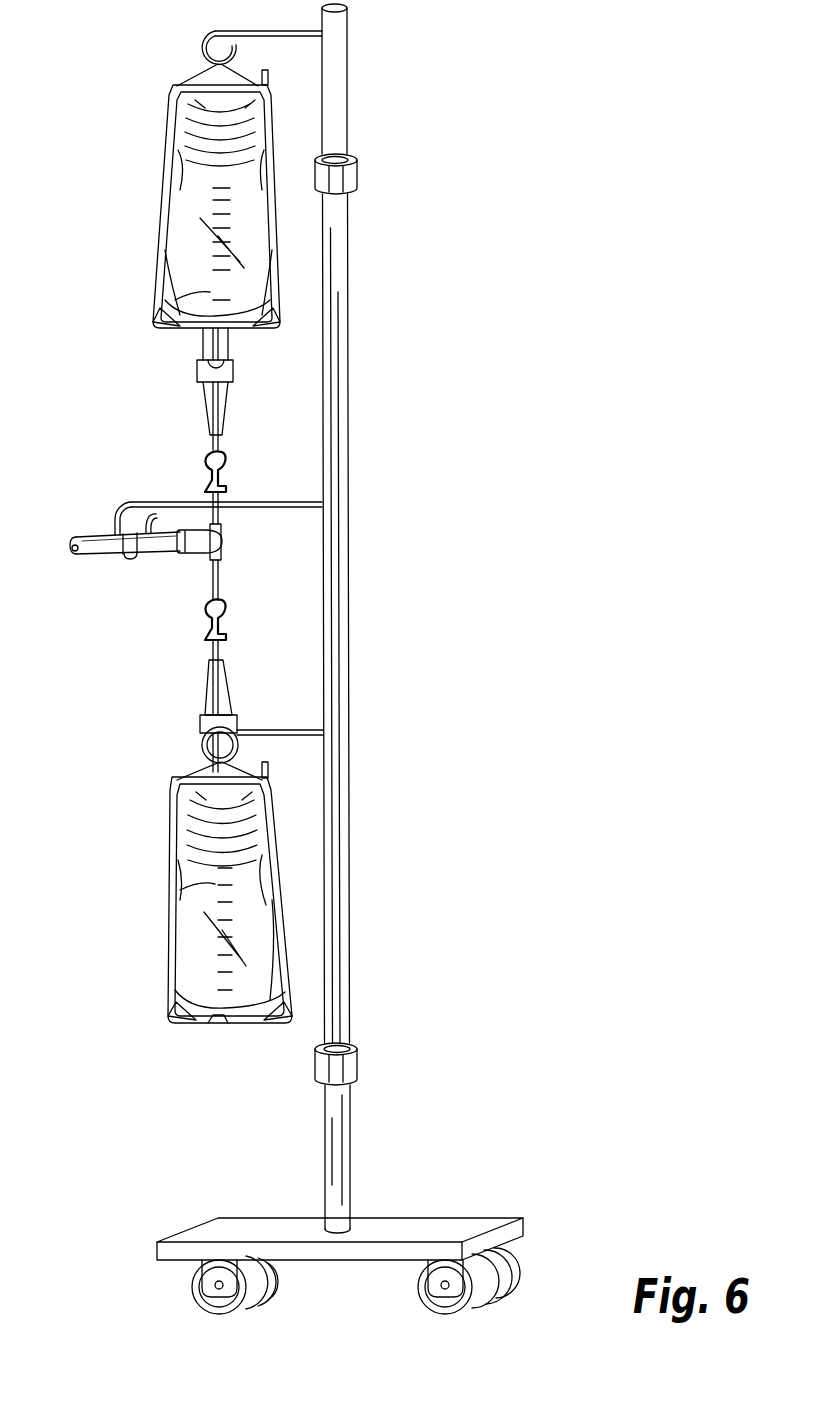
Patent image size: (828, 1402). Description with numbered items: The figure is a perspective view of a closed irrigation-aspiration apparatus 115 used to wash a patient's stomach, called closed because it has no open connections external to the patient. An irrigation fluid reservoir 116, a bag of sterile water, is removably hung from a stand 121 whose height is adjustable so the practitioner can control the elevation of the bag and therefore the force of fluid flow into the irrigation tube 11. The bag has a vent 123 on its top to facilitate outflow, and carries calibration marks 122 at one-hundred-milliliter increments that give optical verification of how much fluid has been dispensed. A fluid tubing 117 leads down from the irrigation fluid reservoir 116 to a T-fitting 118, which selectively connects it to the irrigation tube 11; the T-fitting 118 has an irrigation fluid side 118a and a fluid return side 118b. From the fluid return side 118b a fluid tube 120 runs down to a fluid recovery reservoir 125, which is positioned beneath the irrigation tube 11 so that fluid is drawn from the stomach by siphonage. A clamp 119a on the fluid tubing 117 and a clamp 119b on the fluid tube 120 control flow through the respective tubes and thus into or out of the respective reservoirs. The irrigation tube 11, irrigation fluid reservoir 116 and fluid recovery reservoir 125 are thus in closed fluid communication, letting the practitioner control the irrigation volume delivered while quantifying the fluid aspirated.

The irrigation tube 11 is at (86, 538).
The closed irrigation-aspiration apparatus 115 is at (477, 347).
The irrigation fluid reservoir 116 is at (180, 178).
The fluid tubing 117 is at (222, 498).
The T-fitting 118 is at (222, 543).
The irrigation fluid side 118a is at (222, 522).
The fluid return side 118b is at (212, 560).
The clamp 119a is at (203, 470).
The clamp 119b is at (226, 620).
The fluid tube 120 is at (210, 650).
The stand 121 is at (350, 82).
The calibration marks 122 is at (218, 293).
The vent 123 is at (269, 80).
The fluid recovery reservoir 125 is at (265, 872).